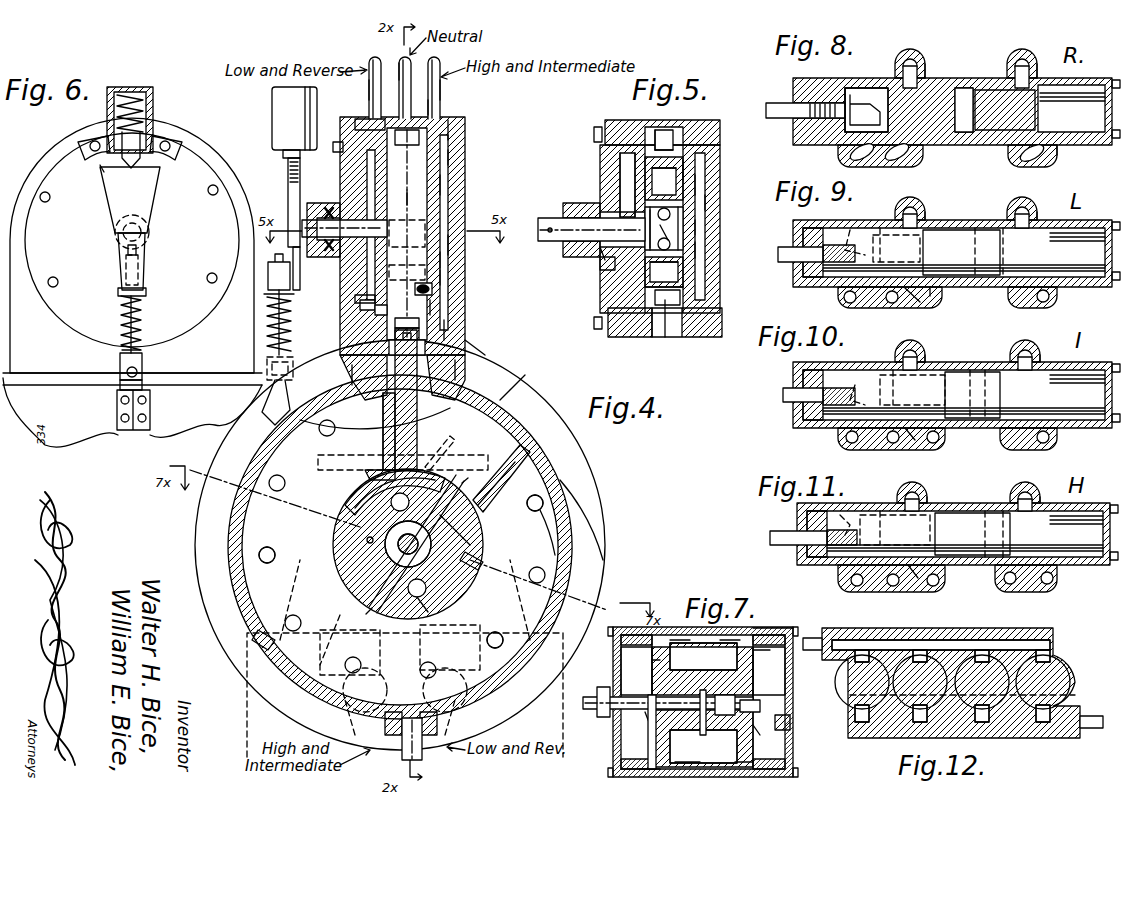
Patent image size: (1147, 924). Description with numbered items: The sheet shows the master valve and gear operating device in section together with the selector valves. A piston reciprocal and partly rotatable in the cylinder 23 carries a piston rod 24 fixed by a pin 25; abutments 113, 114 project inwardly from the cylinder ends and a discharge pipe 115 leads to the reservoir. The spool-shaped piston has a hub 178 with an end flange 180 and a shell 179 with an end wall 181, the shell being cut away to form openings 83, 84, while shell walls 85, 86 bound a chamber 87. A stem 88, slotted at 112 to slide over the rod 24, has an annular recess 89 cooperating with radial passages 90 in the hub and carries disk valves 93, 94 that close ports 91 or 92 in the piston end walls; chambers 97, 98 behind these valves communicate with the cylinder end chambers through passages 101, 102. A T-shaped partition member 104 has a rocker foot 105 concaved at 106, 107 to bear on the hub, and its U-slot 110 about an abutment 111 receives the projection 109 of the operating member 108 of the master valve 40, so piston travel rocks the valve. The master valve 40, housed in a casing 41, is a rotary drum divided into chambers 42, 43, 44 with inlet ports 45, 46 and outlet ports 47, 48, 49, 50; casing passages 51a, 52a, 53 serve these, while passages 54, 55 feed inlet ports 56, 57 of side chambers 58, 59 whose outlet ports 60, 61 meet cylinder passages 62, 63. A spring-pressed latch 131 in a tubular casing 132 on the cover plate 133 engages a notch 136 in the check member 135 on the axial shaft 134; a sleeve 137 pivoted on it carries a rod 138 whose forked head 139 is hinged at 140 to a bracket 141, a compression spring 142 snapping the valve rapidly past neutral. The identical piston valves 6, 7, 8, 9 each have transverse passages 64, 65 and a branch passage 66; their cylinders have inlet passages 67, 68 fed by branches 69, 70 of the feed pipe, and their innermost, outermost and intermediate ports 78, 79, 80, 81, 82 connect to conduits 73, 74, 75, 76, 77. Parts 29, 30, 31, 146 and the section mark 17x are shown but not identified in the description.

In FIG. 8, the reverse piston valve 6 is at (1000, 123).
In FIG. 12, the reverse piston valve 6 is at (843, 687).
In FIG. 9, the low piston valve 7 is at (960, 233).
In FIG. 12, the low piston valve 7 is at (908, 690).
In FIG. 10, the intermediate piston valve 8 is at (988, 370).
In FIG. 12, the intermediate piston valve 8 is at (993, 690).
In FIG. 11, the high piston valve 9 is at (987, 520).
In FIG. 12, the high piston valve 9 is at (1057, 675).
In FIG. 4, the cylinder 23 is at (576, 500).
In FIG. 7, the cylinder 23 is at (777, 630).
In FIG. 4, the piston rod 24 is at (393, 542).
In FIG. 7, the piston rod 24 is at (640, 707).
In FIG. 4, the pin 25 is at (470, 567).
In FIG. 7, the pin 25 is at (703, 720).
In FIG. 4, the bracket 29 is at (360, 608).
In FIG. 4, the lever arm 30 is at (353, 727).
In FIG. 4, the lever arm 31 is at (447, 723).
In FIG. 4, the master valve 40 is at (443, 183).
In FIG. 5, the master valve 40 is at (690, 170).
In FIG. 5, the casing 41 is at (713, 203).
In FIG. 5, the chamber 42 is at (627, 158).
In FIG. 4, the chamber 43 is at (413, 197).
In FIG. 5, the chamber 43 is at (677, 217).
In FIG. 5, the chamber 44 is at (670, 293).
In FIG. 4, the inlet port 45 is at (457, 245).
In FIG. 5, the inlet port 45 is at (663, 152).
In FIG. 5, the inlet port 46 is at (672, 303).
In FIG. 4, the outlet port 47 is at (447, 260).
In FIG. 5, the outlet port 47 is at (680, 155).
In FIG. 5, the outlet port 48 is at (667, 287).
In FIG. 4, the outlet port 49 is at (427, 288).
In FIG. 5, the outlet port 49 is at (707, 185).
In FIG. 5, the outlet port 50 is at (690, 268).
In FIG. 5, the passage 51a is at (658, 135).
In FIG. 5, the passage 52a is at (667, 320).
In FIG. 4, the passage 53 is at (408, 143).
In FIG. 4, the passage 54 is at (375, 127).
In FIG. 4, the passage 55 is at (463, 133).
In FIG. 4, the inlet port 56 is at (343, 160).
In FIG. 4, the inlet port 57 is at (463, 157).
In FIG. 4, the chamber 58 is at (367, 298).
In FIG. 5, the chamber 58 is at (627, 193).
In FIG. 4, the chamber 59 is at (447, 277).
In FIG. 5, the chamber 59 is at (700, 250).
In FIG. 4, the outlet port 60 is at (387, 310).
In FIG. 5, the outlet port 60 is at (603, 268).
In FIG. 4, the outlet port 61 is at (435, 307).
In FIG. 5, the outlet port 61 is at (700, 227).
In FIG. 4, the cylinder passage 62 is at (407, 340).
In FIG. 4, the cylinder passage 63 is at (487, 353).
In FIG. 8, the transverse passage 64 is at (967, 90).
In FIG. 9, the transverse passage 64 is at (1003, 243).
In FIG. 10, the transverse passage 64 is at (963, 372).
In FIG. 11, the transverse passage 64 is at (967, 520).
In FIG. 8, the transverse passage 65 is at (850, 92).
In FIG. 9, the transverse passage 65 is at (860, 233).
In FIG. 10, the transverse passage 65 is at (860, 370).
In FIG. 11, the transverse passage 65 is at (837, 513).
In FIG. 8, the branch passage 66 is at (867, 107).
In FIG. 9, the branch passage 66 is at (888, 230).
In FIG. 10, the branch passage 66 is at (917, 392).
In FIG. 11, the branch passage 66 is at (870, 513).
In FIG. 8, the inlet passage 67 is at (923, 73).
In FIG. 9, the inlet passage 67 is at (927, 215).
In FIG. 10, the inlet passage 67 is at (927, 358).
In FIG. 11, the inlet passage 67 is at (927, 500).
In FIG. 12, the inlet passage 67 is at (867, 640).
In FIG. 8, the inlet passage 68 is at (1033, 67).
In FIG. 9, the inlet passage 68 is at (1033, 213).
In FIG. 10, the inlet passage 68 is at (1035, 356).
In FIG. 11, the inlet passage 68 is at (1033, 490).
In FIG. 8, the branch 69 is at (910, 57).
In FIG. 9, the branch 69 is at (910, 202).
In FIG. 10, the branch 69 is at (902, 353).
In FIG. 11, the branch 69 is at (913, 493).
In FIG. 12, the branch 69 is at (813, 637).
In FIG. 8, the branch 70 is at (1022, 53).
In FIG. 9, the branch 70 is at (1023, 202).
In FIG. 10, the branch 70 is at (1024, 350).
In FIG. 11, the branch 70 is at (1025, 493).
In FIG. 4, the conduit 73 is at (369, 90).
In FIG. 8, the conduit 73 is at (1053, 157).
In FIG. 9, the conduit 73 is at (1047, 297).
In FIG. 10, the conduit 73 is at (1050, 435).
In FIG. 11, the conduit 73 is at (1053, 583).
In FIG. 4, the conduit 74 is at (438, 107).
In FIG. 11, the conduit 74 is at (1000, 587).
In FIG. 8, the conduit 75 is at (893, 140).
In FIG. 9, the conduit 75 is at (937, 303).
In FIG. 10, the conduit 75 is at (937, 437).
In FIG. 11, the conduit 75 is at (937, 588).
In FIG. 12, the conduit 75 is at (1090, 720).
In FIG. 9, the conduit 76 is at (892, 303).
In FIG. 10, the conduit 76 is at (893, 430).
In FIG. 11, the conduit 76 is at (893, 583).
In FIG. 4, the conduit 77 is at (400, 60).
In FIG. 8, the conduit 77 is at (840, 155).
In FIG. 9, the conduit 77 is at (840, 300).
In FIG. 10, the conduit 77 is at (840, 443).
In FIG. 11, the conduit 77 is at (840, 583).
In FIG. 8, the innermost ports 78 is at (870, 142).
In FIG. 9, the innermost ports 78 is at (865, 305).
In FIG. 10, the innermost ports 78 is at (870, 430).
In FIG. 11, the innermost ports 78 is at (867, 568).
In FIG. 8, the outermost ports 79 is at (1023, 140).
In FIG. 9, the outermost ports 79 is at (1017, 292).
In FIG. 10, the outermost ports 80 is at (1023, 427).
In FIG. 11, the outermost ports 80 is at (1023, 573).
In FIG. 7, the intermediate ports 81 is at (788, 723).
In FIG. 8, the intermediate ports 81 is at (907, 138).
In FIG. 10, the intermediate ports 81 is at (912, 428).
In FIG. 12, the intermediate ports 81 is at (860, 723).
In FIG. 9, the intermediate ports 82 is at (915, 303).
In FIG. 11, the intermediate ports 82 is at (915, 573).
In FIG. 12, the intermediate ports 82 is at (922, 717).
In FIG. 4, the opening 83 is at (470, 415).
In FIG. 4, the opening 84 is at (273, 637).
In FIG. 4, the shell wall 85 is at (377, 410).
In FIG. 4, the shell wall 86 is at (498, 468).
In FIG. 4, the chamber 87 is at (520, 378).
In FIG. 7, the stem 88 is at (652, 737).
In FIG. 4, the annular recess 89 is at (390, 550).
In FIG. 7, the annular recess 89 is at (723, 707).
In FIG. 4, the radial passages 90 is at (430, 485).
In FIG. 4, the ports 91 is at (530, 503).
In FIG. 7, the ports 91 is at (678, 638).
In FIG. 7, the ports 92 is at (730, 640).
In FIG. 7, the disk valve 93 is at (657, 662).
In FIG. 7, the disk valve 94 is at (760, 708).
In FIG. 7, the chamber 97 is at (647, 720).
In FIG. 7, the chamber 98 is at (757, 732).
In FIG. 4, the passage 101 is at (360, 527).
In FIG. 4, the passage 102 is at (430, 607).
In FIG. 4, the partition member 104 is at (417, 400).
In FIG. 4, the rocker foot 105 is at (375, 460).
In FIG. 4, the concaved surface 106 is at (357, 503).
In FIG. 4, the concaved surface 107 is at (443, 460).
In FIG. 4, the operating member 108 is at (417, 323).
In FIG. 5, the operating member 108 is at (667, 233).
In FIG. 4, the projection 109 is at (353, 373).
In FIG. 4, the U-slot 110 is at (463, 368).
In FIG. 4, the abutment 111 is at (400, 322).
In FIG. 7, the slot 112 is at (703, 656).
In FIG. 7, the abutment 113 is at (630, 693).
In FIG. 7, the abutment 114 is at (780, 695).
In FIG. 4, the discharge pipe 115 is at (412, 743).
In FIG. 6, the latch 131 is at (140, 160).
In FIG. 4, the latch 131 is at (283, 155).
In FIG. 6, the tubular casing 132 is at (152, 105).
In FIG. 4, the tubular casing 132 is at (294, 118).
In FIG. 4, the cover plate 133 is at (343, 267).
In FIG. 5, the cover plate 133 is at (607, 290).
In FIG. 6, the axial shaft 134 is at (113, 240).
In FIG. 4, the axial shaft 134 is at (322, 227).
In FIG. 5, the axial shaft 134 is at (578, 240).
In FIG. 6, the check member 135 is at (143, 202).
In FIG. 4, the check member 135 is at (290, 198).
In FIG. 5, the check member 135 is at (550, 212).
In FIG. 6, the notch 136 is at (103, 167).
In FIG. 6, the pivoted sleeve 137 is at (145, 287).
In FIG. 4, the pivoted sleeve 137 is at (282, 272).
In FIG. 6, the rod 138 is at (138, 353).
In FIG. 4, the rod 138 is at (290, 327).
In FIG. 6, the forked head 139 is at (120, 364).
In FIG. 6, the hinge connection 140 is at (143, 382).
In FIG. 4, the hinge connection 140 is at (267, 370).
In FIG. 6, the bracket 141 is at (118, 407).
In FIG. 4, the bracket 141 is at (257, 413).
In FIG. 6, the compression spring 142 is at (118, 310).
In FIG. 4, the compression spring 142 is at (267, 320).
In FIG. 4, the roller 146 is at (347, 662).
In FIG. 4, the hub 178 is at (457, 533).
In FIG. 7, the hub 178 is at (687, 727).
In FIG. 4, the shell 179 is at (552, 528).
In FIG. 7, the shell 179 is at (687, 762).
In FIG. 7, the end wall 180 is at (652, 772).
In FIG. 7, the end wall 181 is at (743, 762).
In FIG. 4, the section line 17x is at (440, 90).